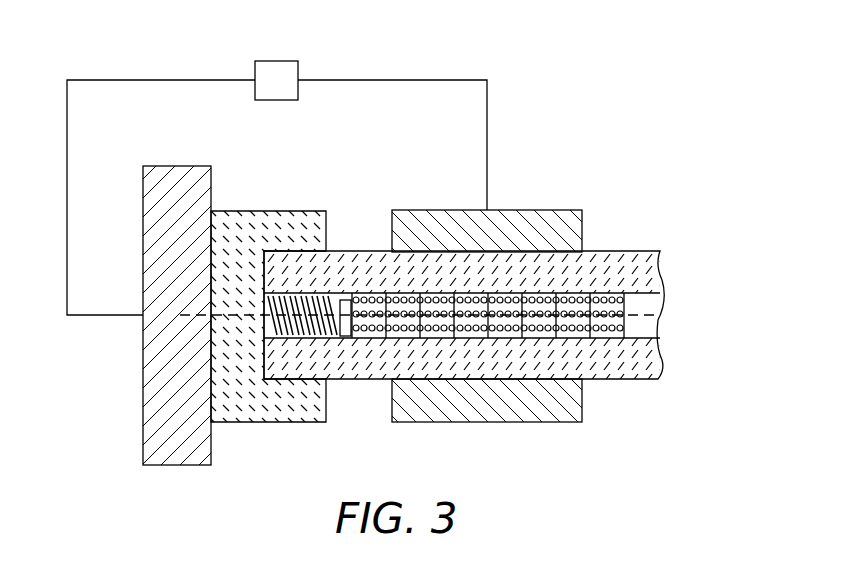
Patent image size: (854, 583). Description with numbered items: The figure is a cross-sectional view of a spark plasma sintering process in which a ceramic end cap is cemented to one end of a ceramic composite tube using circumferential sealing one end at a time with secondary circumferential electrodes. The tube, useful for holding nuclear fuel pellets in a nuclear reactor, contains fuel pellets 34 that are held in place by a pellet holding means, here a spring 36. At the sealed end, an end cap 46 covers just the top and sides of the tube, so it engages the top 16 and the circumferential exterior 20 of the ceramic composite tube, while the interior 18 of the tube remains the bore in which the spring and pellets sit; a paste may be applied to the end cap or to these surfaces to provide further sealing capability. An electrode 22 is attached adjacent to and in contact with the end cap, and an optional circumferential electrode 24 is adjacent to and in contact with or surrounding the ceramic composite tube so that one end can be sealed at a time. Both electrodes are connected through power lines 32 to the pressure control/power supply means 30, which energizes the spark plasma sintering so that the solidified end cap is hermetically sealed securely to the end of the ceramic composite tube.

The top 16 is at (264, 296).
The interior 18 is at (268, 316).
The circumferential exterior 20 is at (355, 262).
The electrode 22 is at (143, 428).
The electrode 24 is at (535, 210).
The pressure control/power supply means 30 is at (278, 61).
The power lines 32 is at (140, 80).
The fuel pellets 34 is at (630, 312).
The spring 36 is at (333, 336).
The end cap 46 is at (230, 212).